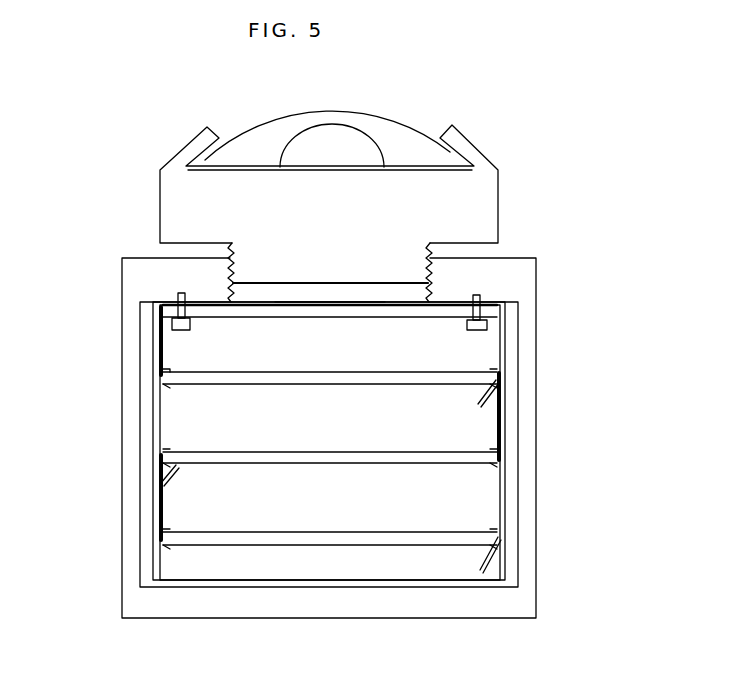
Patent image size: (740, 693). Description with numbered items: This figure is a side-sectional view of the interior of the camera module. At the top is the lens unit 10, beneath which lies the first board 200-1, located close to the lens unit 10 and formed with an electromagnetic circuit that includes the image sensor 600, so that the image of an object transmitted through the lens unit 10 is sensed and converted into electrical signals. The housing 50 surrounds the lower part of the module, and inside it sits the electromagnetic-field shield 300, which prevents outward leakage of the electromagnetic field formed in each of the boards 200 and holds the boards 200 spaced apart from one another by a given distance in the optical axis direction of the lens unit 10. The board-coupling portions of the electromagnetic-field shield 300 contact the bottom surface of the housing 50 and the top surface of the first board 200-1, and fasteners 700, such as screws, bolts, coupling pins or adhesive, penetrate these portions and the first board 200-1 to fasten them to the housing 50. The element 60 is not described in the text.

The lens unit 10 is at (166, 163).
The image sensor 600 is at (329, 302).
The housing 50 is at (120, 276).
The electromagnetic-field shield 300 is at (156, 418).
The coil 60 is at (158, 500).
The first board 200-1 is at (446, 307).
The fasteners 700 is at (160, 313).
The boards 200 is at (280, 382).